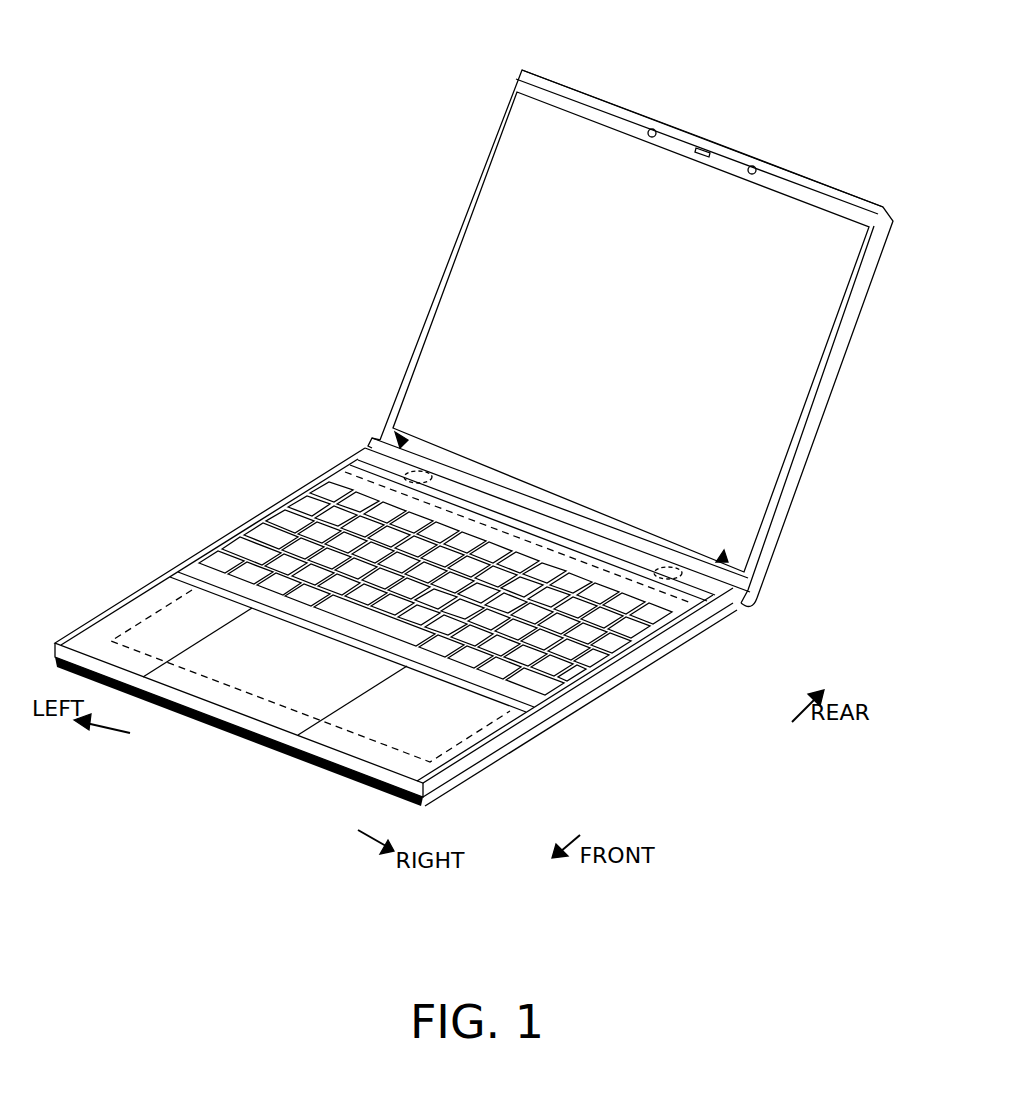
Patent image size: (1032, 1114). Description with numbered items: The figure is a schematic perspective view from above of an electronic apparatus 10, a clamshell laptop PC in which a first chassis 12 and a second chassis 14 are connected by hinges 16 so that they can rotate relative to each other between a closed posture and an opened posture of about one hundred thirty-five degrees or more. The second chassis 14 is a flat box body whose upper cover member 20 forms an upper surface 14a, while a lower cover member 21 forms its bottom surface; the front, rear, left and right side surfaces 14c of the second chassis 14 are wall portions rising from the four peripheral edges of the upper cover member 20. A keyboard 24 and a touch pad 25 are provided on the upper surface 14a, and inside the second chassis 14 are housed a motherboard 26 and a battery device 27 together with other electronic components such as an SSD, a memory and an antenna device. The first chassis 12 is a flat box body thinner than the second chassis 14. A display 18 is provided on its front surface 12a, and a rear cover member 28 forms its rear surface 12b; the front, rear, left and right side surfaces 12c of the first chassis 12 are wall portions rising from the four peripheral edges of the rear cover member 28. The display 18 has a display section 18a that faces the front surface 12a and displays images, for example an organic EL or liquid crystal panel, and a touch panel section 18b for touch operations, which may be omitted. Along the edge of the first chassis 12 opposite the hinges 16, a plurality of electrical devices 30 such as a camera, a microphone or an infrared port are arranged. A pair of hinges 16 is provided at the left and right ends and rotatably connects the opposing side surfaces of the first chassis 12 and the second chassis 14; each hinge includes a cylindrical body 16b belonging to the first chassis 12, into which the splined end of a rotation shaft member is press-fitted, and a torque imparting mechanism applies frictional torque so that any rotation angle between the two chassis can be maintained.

The electronic apparatus 10 is at (876, 32).
The first chassis 12 is at (850, 322).
The front surface 12a is at (556, 152).
The rear surface 12b is at (816, 183).
The rear cover member 28 is at (611, 103).
The side surfaces 12c is at (612, 97).
The second chassis 14 is at (650, 700).
The upper surface 14a is at (140, 607).
The side surfaces 14c is at (593, 530).
The hinges 16 is at (398, 396).
The cylindrical body 16b is at (420, 465).
The display 18 is at (886, 392).
The display section 18a is at (765, 385).
The touch panel section 18b is at (755, 430).
The upper cover member 20 is at (482, 718).
The lower cover member 21 is at (445, 790).
The keyboard 24 is at (246, 514).
The touch pad 25 is at (238, 707).
The motherboard 26 is at (300, 492).
The battery device 27 is at (215, 553).
The electrical devices 30 is at (652, 128).